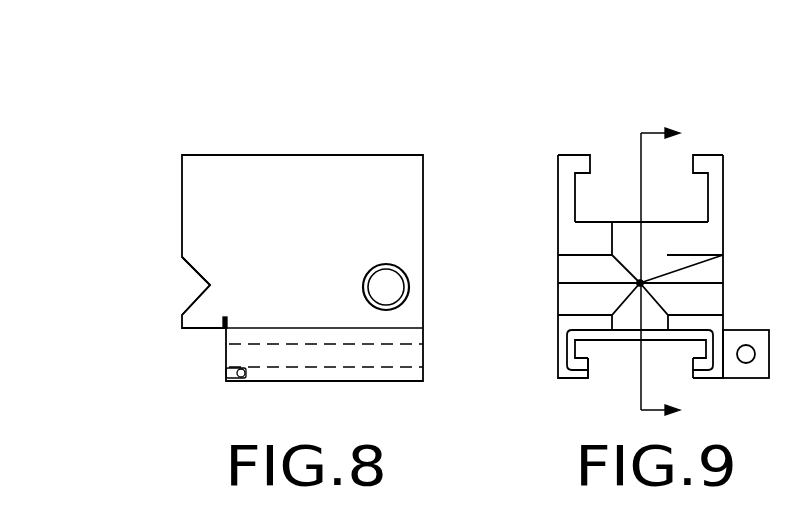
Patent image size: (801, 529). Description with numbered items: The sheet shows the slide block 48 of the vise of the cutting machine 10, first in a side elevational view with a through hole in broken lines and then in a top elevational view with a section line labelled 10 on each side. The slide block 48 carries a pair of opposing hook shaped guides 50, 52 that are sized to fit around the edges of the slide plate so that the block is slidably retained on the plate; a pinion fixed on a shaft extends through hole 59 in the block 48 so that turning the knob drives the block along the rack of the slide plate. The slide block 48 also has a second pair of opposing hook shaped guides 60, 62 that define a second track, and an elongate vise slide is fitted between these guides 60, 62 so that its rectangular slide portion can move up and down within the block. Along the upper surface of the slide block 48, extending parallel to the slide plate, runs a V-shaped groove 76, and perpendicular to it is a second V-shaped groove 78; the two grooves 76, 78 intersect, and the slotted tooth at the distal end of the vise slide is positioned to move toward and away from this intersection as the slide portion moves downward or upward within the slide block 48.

In FIG. 9, the machine 10 is at (678, 272).
In FIG. 8, the slide block 48 is at (327, 156).
In FIG. 9, the hook shaped guide 50 is at (565, 379).
In FIG. 9, the hook shaped guide 52 is at (710, 380).
In FIG. 8, the hole 59 is at (403, 270).
In FIG. 9, the hook shaped guide 60 is at (723, 155).
In FIG. 9, the hook shaped guide 62 is at (566, 155).
In FIG. 9, the V-shaped groove 76 is at (583, 284).
In FIG. 8, the second V-shaped groove 78 is at (195, 272).
In FIG. 9, the second V-shaped groove 78 is at (640, 248).